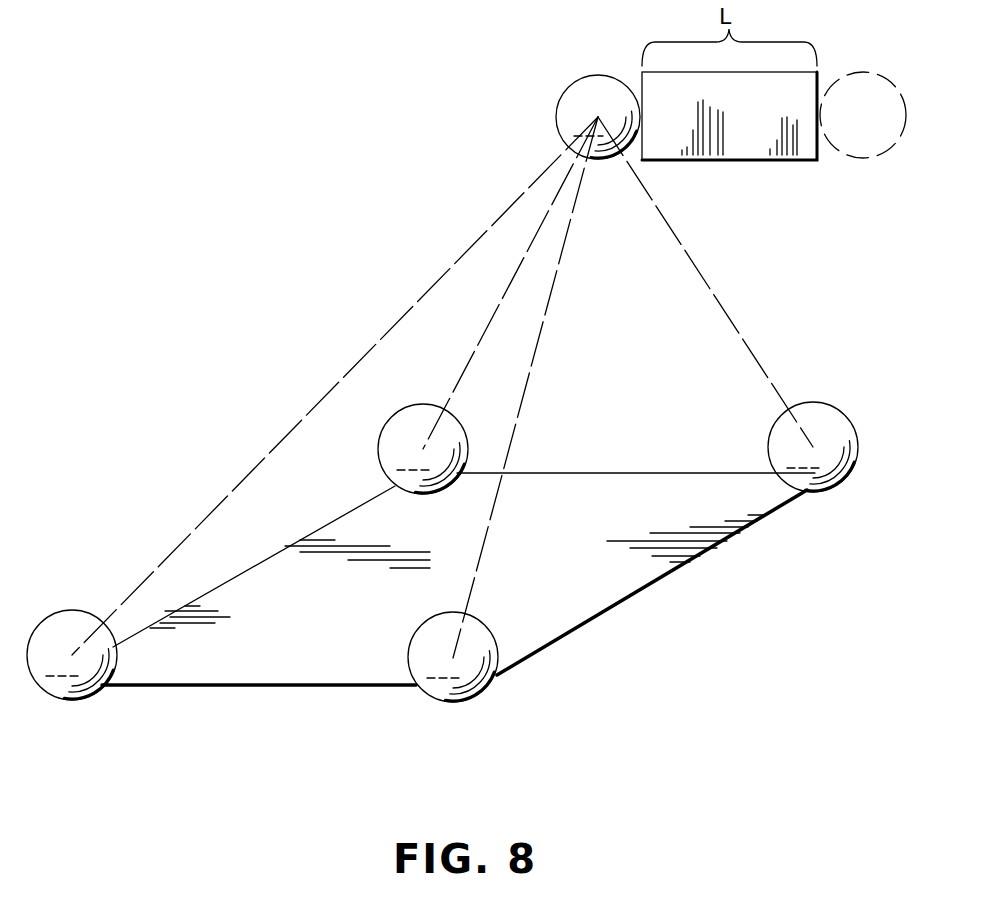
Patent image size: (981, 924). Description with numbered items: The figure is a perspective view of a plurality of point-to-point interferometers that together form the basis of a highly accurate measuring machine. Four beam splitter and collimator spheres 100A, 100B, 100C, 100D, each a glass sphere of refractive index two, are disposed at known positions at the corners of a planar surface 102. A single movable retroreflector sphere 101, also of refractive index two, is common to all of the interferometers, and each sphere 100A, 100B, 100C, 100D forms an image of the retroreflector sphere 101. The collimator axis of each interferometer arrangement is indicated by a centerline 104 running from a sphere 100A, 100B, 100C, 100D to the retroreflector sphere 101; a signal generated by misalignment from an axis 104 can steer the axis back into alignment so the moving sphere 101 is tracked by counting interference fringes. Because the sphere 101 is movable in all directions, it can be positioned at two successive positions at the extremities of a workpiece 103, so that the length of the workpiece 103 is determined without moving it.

The retroreflector sphere 101 is at (572, 92).
The workpiece 103 is at (741, 148).
The centerline 104 is at (750, 288).
The planar surface 102 is at (612, 596).
The beam splitter and collimator sphere 100A is at (65, 617).
The beam splitter and collimator sphere 100B is at (458, 702).
The beam splitter and collimator sphere 100C is at (822, 412).
The beam splitter and collimator sphere 100D is at (385, 450).